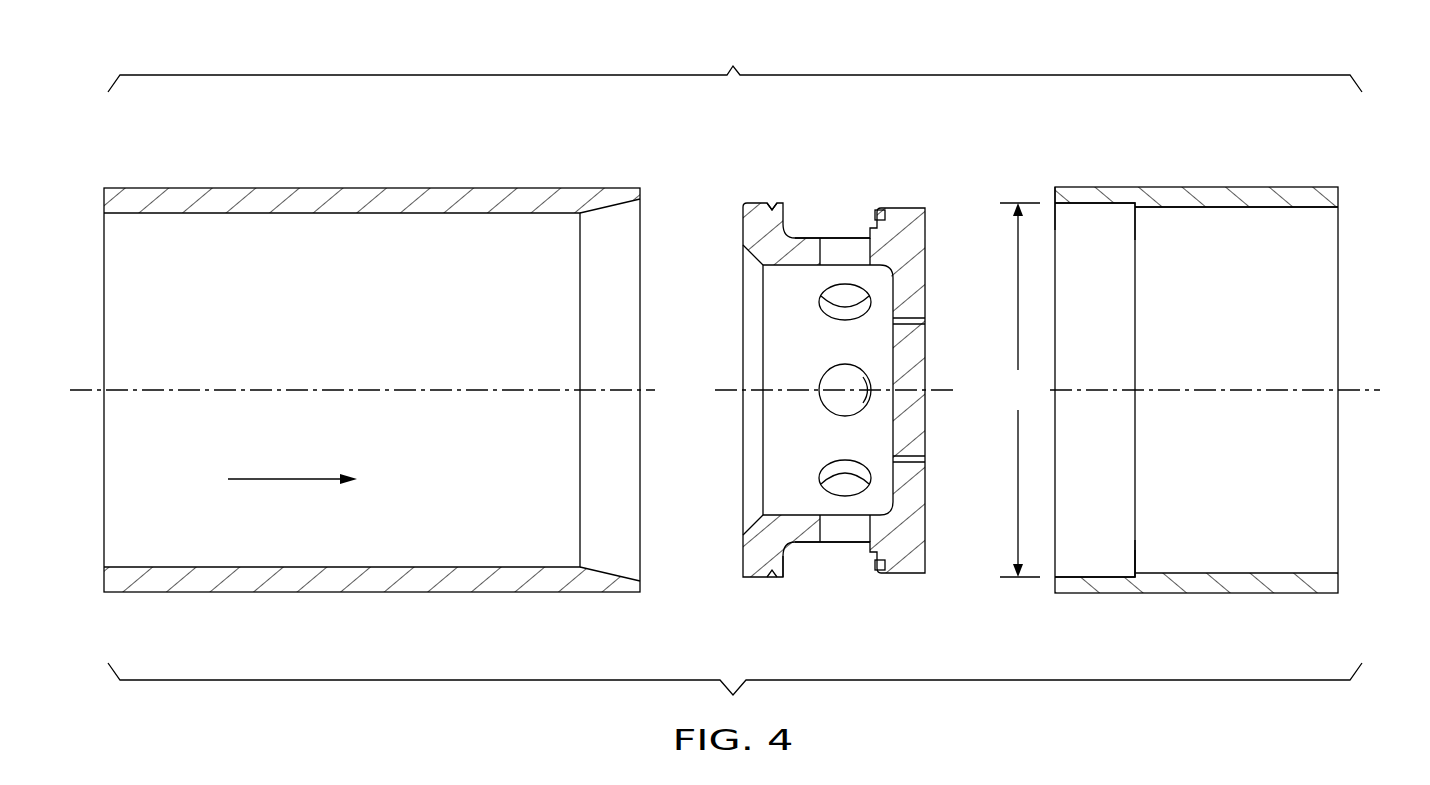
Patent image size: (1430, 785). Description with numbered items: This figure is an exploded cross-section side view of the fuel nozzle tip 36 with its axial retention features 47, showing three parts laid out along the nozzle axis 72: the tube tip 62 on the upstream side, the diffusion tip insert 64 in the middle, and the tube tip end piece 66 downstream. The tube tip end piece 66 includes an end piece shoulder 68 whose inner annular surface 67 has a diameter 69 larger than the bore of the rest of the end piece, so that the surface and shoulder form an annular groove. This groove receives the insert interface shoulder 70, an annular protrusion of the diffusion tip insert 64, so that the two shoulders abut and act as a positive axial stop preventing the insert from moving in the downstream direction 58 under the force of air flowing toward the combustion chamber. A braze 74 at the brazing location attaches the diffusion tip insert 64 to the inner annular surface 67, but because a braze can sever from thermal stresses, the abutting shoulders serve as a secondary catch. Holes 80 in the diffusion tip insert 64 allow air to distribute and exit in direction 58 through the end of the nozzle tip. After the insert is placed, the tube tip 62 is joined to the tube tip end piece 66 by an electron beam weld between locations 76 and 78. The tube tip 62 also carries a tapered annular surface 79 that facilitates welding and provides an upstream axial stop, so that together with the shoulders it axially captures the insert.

The fuel nozzle tip 36 is at (735, 363).
The tube tip 62 is at (340, 237).
The location 76 is at (641, 189).
The tapered annular surface 79 is at (613, 574).
The direction 58 is at (290, 480).
The diffusion tip insert 64 is at (901, 535).
The braze 74 is at (772, 200).
The insert interface shoulder 70 is at (786, 218).
The holes 80 is at (925, 321).
The axial retention features 47 is at (793, 578).
The tube tip end piece 66 is at (1218, 187).
The location 78 is at (1057, 187).
The end piece shoulder 68 is at (1135, 204).
The inner annular surface 67 is at (1115, 576).
The nozzle axis 72 is at (1300, 386).
The diameter 69 is at (1020, 390).